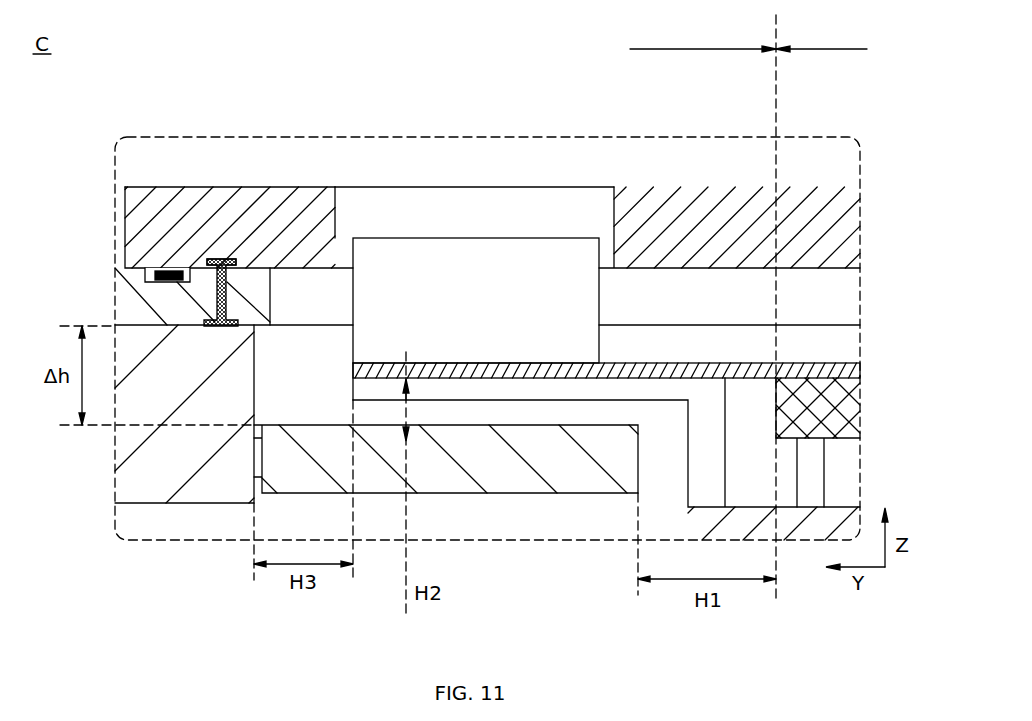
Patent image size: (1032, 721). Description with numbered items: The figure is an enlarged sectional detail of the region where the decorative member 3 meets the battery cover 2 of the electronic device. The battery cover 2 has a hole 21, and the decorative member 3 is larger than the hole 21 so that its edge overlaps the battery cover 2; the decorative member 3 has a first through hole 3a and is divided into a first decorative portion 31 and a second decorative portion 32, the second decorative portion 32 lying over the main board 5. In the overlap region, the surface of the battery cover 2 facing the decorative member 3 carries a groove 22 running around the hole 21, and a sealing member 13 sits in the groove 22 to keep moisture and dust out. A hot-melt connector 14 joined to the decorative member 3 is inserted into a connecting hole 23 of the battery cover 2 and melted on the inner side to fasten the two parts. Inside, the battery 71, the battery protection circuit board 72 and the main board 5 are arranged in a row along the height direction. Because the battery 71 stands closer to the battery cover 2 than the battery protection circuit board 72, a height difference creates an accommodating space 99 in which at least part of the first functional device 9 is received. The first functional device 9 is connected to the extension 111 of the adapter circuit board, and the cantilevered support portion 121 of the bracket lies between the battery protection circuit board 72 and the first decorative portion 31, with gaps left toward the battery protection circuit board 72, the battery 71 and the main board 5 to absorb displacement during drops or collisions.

The battery cover 2 is at (165, 303).
The decorative member 3 is at (818, 226).
The first through hole 3a is at (572, 213).
The main board 5 is at (820, 410).
The first functional device 9 is at (450, 277).
The sealing member 13 is at (170, 267).
The hot-melt connector 14 is at (218, 258).
The hole 21 is at (305, 305).
The groove 22 is at (145, 277).
The connecting hole 23 is at (236, 297).
The first decorative portion 31 is at (703, 35).
The second decorative portion 32 is at (821, 35).
The battery 71 is at (135, 442).
The battery protection circuit board 72 is at (602, 460).
The accommodating space 99 is at (282, 365).
The extension 111 is at (510, 370).
The support portion 121 is at (457, 390).